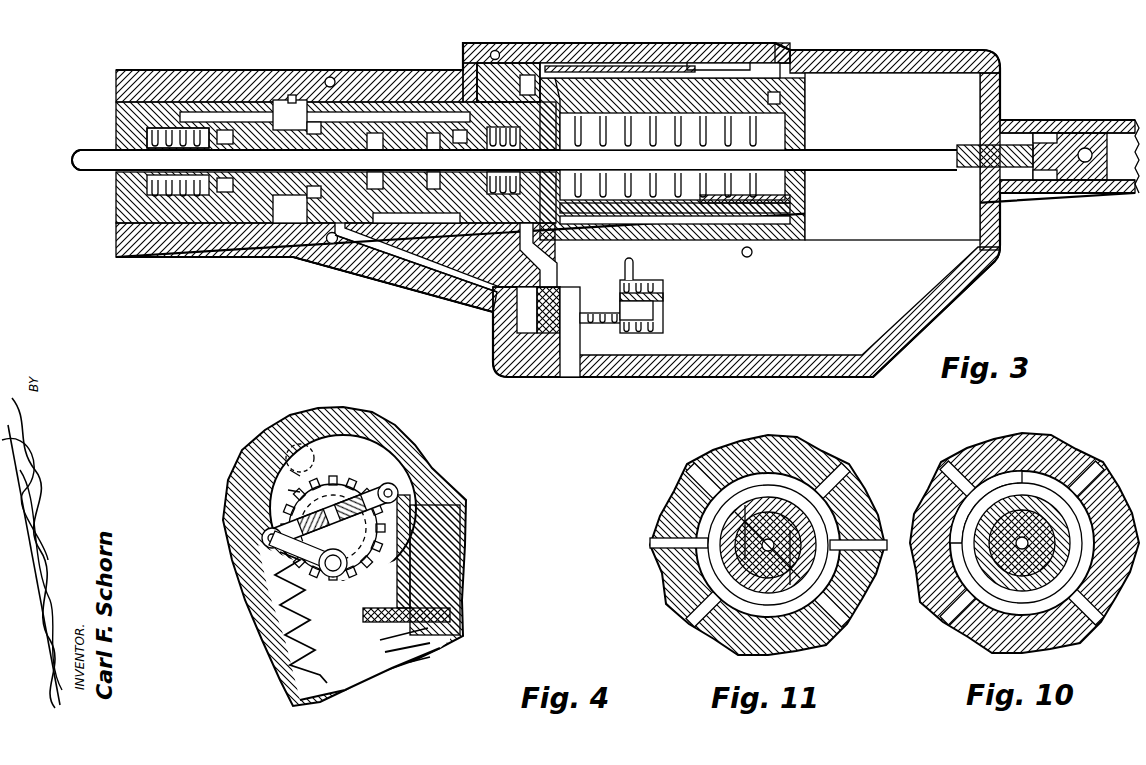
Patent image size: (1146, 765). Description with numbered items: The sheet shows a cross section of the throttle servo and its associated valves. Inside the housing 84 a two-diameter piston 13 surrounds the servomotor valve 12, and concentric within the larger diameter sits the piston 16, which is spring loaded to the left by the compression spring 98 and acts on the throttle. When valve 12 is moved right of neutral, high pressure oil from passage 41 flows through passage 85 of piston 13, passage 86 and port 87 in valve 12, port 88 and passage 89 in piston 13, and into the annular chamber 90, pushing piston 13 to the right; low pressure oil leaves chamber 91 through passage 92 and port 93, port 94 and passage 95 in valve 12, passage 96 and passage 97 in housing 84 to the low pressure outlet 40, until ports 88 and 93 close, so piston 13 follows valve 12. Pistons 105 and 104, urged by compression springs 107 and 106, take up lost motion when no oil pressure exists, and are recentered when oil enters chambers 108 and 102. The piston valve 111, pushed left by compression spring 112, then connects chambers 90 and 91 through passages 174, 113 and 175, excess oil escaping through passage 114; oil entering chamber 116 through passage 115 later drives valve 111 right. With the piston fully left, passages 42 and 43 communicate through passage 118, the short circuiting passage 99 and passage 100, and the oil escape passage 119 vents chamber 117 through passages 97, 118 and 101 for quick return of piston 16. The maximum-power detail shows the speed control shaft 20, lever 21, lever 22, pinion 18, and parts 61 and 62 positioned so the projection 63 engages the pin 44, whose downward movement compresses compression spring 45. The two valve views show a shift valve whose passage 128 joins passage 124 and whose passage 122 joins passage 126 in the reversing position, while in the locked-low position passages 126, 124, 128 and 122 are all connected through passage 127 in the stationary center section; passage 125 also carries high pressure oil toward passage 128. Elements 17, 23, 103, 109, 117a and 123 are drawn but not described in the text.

In FIG. 3, the servomotor valve 12 is at (290, 115).
In FIG. 3, the piston 13 is at (118, 208).
In FIG. 3, the piston 16 is at (672, 133).
In FIG. 4, the pinion 17 is at (300, 455).
In FIG. 4, the pinion 18 is at (332, 485).
In FIG. 4, the speed control shaft 20 is at (333, 577).
In FIG. 4, the lever 21 is at (302, 550).
In FIG. 4, the lever 22 is at (333, 528).
In FIG. 4, the gear teeth 23 is at (315, 485).
In FIG. 11, the low pressure oil outlet 40 is at (776, 545).
In FIG. 10, the low pressure oil outlet 40 is at (1024, 537).
In FIG. 3, the high pressure oil passage 41 is at (332, 244).
In FIG. 3, the oil passage 42 is at (495, 50).
In FIG. 3, the oil passage 43 is at (748, 258).
In FIG. 4, the pin 44 is at (398, 499).
In FIG. 4, the compression spring 45 is at (385, 652).
In FIG. 4, the lever part 61 is at (266, 534).
In FIG. 4, the lever part 62 is at (390, 483).
In FIG. 4, the projection 63 is at (420, 495).
In FIG. 3, the housing 84 is at (885, 56).
In FIG. 3, the passage 85 is at (283, 225).
In FIG. 3, the passage 86 is at (265, 225).
In FIG. 3, the port 87 is at (367, 272).
In FIG. 3, the port 88 is at (432, 133).
In FIG. 3, the passage 89 is at (600, 66).
In FIG. 3, the annular chamber 90 is at (570, 80).
In FIG. 3, the chamber 91 is at (892, 156).
In FIG. 3, the passage 92 is at (796, 221).
In FIG. 3, the port 93 is at (345, 248).
In FIG. 3, the port 94 is at (300, 225).
In FIG. 3, the passage 95 is at (313, 124).
In FIG. 3, the passage 96 is at (285, 100).
In FIG. 3, the passage 97 is at (377, 112).
In FIG. 3, the compression spring 98 is at (780, 125).
In FIG. 3, the short circuiting passage 99 is at (780, 98).
In FIG. 3, the passage 100 is at (792, 206).
In FIG. 3, the passage 101 is at (788, 52).
In FIG. 3, the chamber 102 is at (380, 133).
In FIG. 3, the spring 103 is at (215, 258).
In FIG. 3, the piston 104 is at (508, 127).
In FIG. 3, the piston 105 is at (205, 130).
In FIG. 3, the compression spring 106 is at (527, 80).
In FIG. 3, the compression spring 107 is at (147, 136).
In FIG. 3, the chamber 108 is at (228, 130).
In FIG. 3, the seal ring 109 is at (460, 130).
In FIG. 3, the piston valve 111 is at (545, 378).
In FIG. 3, the compression spring 112 is at (607, 340).
In FIG. 3, the passage 113 is at (572, 380).
In FIG. 3, the passage 114 is at (640, 333).
In FIG. 3, the passage 115 is at (457, 270).
In FIG. 3, the chamber 116 is at (515, 323).
In FIG. 3, the chamber 117 is at (560, 190).
In FIG. 3, the spring seat 117a is at (785, 193).
In FIG. 3, the passage 118 is at (700, 64).
In FIG. 3, the oil escape passage 119 is at (485, 70).
In FIG. 4, the passage 122 is at (322, 662).
In FIG. 11, the passage 122 is at (858, 628).
In FIG. 10, the passage 122 is at (1095, 622).
In FIG. 11, the groove 123 is at (730, 572).
In FIG. 10, the groove 123 is at (1000, 605).
In FIG. 11, the passage 124 is at (690, 625).
In FIG. 10, the passage 124 is at (945, 625).
In FIG. 11, the passage 125 is at (812, 448).
In FIG. 10, the passage 125 is at (955, 523).
In FIG. 11, the passage 126 is at (846, 470).
In FIG. 10, the passage 126 is at (1100, 462).
In FIG. 11, the passage 127 is at (700, 538).
In FIG. 11, the passage 128 is at (690, 466).
In FIG. 10, the passage 128 is at (945, 464).
In FIG. 3, the passage 174 is at (960, 275).
In FIG. 3, the passage 175 is at (480, 283).